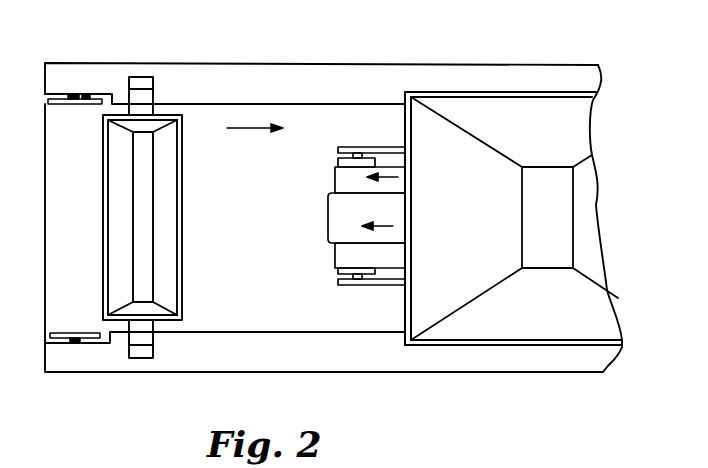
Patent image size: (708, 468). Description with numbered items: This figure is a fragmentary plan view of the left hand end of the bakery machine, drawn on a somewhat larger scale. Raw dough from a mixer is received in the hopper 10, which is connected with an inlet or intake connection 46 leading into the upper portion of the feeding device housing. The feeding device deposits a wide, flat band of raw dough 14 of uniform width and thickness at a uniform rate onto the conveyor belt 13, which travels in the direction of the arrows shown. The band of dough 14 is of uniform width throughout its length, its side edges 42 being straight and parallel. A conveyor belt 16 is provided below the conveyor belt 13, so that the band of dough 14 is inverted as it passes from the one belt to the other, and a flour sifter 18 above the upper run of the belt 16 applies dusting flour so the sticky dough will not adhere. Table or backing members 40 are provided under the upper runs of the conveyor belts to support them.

The hopper 10 is at (523, 105).
The conveyor belt 13 is at (336, 186).
The band of raw dough 14 is at (328, 213).
The conveyor belt 16 is at (262, 322).
The flour sifter 18 is at (163, 142).
The table or backing members 40 is at (337, 82).
The side edges 42 is at (364, 191).
The inlet or intake connection 46 is at (563, 190).